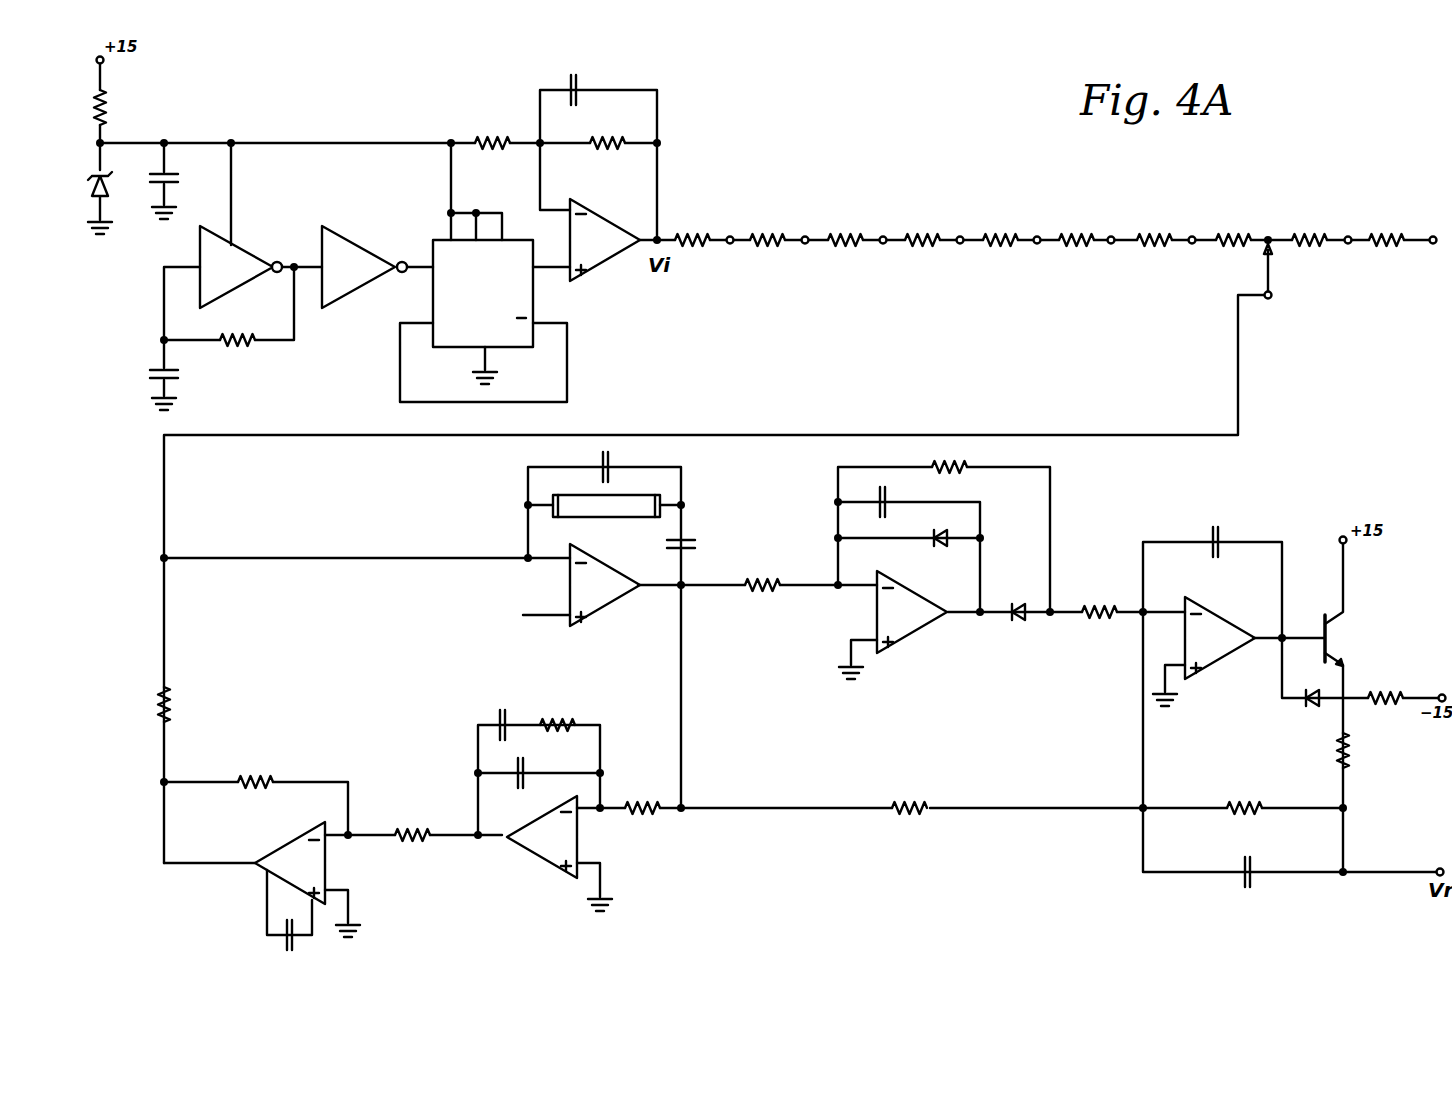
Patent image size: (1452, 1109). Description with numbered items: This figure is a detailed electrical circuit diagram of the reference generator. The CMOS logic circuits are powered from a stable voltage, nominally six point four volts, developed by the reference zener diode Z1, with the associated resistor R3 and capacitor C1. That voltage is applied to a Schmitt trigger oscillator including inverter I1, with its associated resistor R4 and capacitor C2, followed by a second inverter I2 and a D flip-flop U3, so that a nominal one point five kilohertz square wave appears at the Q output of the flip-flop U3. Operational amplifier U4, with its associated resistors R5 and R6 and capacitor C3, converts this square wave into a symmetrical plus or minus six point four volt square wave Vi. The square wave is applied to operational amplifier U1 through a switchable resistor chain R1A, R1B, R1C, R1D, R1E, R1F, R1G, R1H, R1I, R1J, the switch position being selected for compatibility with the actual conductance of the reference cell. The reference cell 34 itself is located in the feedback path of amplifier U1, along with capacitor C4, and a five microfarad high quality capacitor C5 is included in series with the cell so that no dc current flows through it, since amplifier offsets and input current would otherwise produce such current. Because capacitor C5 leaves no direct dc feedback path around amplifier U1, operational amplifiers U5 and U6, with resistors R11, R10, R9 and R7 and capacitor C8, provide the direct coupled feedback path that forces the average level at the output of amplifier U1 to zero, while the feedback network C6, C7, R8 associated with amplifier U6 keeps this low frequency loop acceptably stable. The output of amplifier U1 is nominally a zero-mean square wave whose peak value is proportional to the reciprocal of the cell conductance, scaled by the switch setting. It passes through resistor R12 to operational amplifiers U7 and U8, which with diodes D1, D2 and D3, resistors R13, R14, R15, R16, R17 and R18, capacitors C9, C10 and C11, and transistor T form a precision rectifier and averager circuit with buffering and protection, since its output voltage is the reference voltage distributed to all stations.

The resistor R3 is at (114, 107).
The reference zener diode Z1 is at (86, 196).
The capacitor C1 is at (177, 196).
The capacitor C2 is at (154, 377).
The resistor R4 is at (237, 353).
The inverter I1 is at (241, 267).
The inverter I2 is at (364, 267).
The D flip-flop U3 is at (483, 312).
The resistor R5 is at (492, 130).
The resistor R6 is at (607, 130).
The capacitor C3 is at (589, 84).
The operational amplifier U4 is at (605, 240).
The resistor of switchable resistor chain R1A is at (692, 228).
The resistor of switchable resistor chain R1B is at (767, 228).
The resistor of switchable resistor chain R1C is at (845, 228).
The resistor of switchable resistor chain R1D is at (923, 228).
The resistor of switchable resistor chain R1E is at (1000, 228).
The resistor of switchable resistor chain R1F is at (1077, 228).
The resistor of switchable resistor chain R1G is at (1155, 228).
The resistor of switchable resistor chain R1H is at (1234, 228).
The resistor of switchable resistor chain R1I is at (1309, 228).
The resistor of switchable resistor chain R1J is at (1386, 228).
The capacitor C4 is at (620, 463).
The temperature sensing resistor 34 is at (610, 520).
The capacitor C5 is at (692, 533).
The operational amplifier U1 is at (605, 585).
The resistor R12 is at (762, 597).
The resistor R13 is at (951, 456).
The capacitor C9 is at (899, 499).
The diode D1 is at (948, 528).
The operational amplifier U7 is at (912, 612).
The diode D2 is at (1019, 625).
The resistor R14 is at (1101, 625).
The capacitor C10 is at (1234, 532).
The operational amplifier U8 is at (1220, 638).
The transistor T is at (1346, 640).
The diode D3 is at (1311, 711).
The resistor R17 is at (1386, 685).
The resistor R18 is at (1363, 750).
The resistor R16 is at (1246, 796).
The capacitor C11 is at (1257, 863).
The resistor R11 is at (148, 704).
The resistor R10 is at (256, 770).
The operational amplifier U5 is at (307, 879).
The capacitor C8 is at (289, 951).
The resistor R9 is at (412, 847).
The operational amplifier U6 is at (559, 853).
The capacitor C6 is at (501, 713).
The resistor R8 is at (557, 713).
The capacitor C7 is at (535, 770).
The resistor R7 is at (642, 820).
The resistor R15 is at (911, 820).